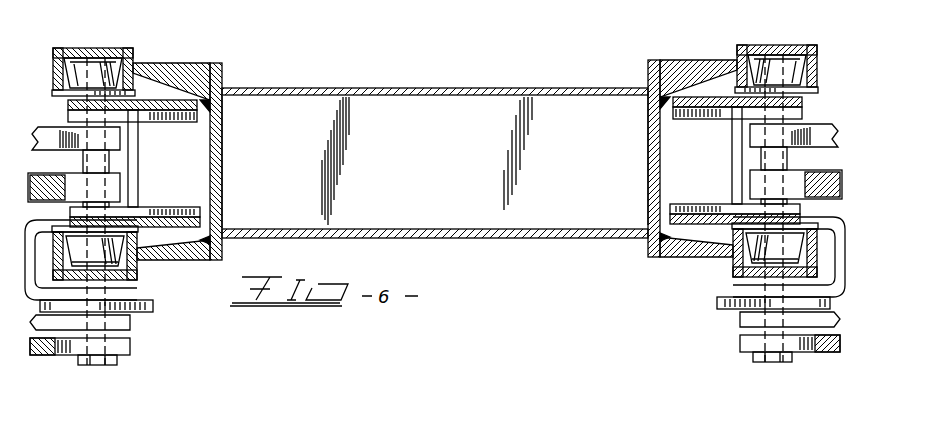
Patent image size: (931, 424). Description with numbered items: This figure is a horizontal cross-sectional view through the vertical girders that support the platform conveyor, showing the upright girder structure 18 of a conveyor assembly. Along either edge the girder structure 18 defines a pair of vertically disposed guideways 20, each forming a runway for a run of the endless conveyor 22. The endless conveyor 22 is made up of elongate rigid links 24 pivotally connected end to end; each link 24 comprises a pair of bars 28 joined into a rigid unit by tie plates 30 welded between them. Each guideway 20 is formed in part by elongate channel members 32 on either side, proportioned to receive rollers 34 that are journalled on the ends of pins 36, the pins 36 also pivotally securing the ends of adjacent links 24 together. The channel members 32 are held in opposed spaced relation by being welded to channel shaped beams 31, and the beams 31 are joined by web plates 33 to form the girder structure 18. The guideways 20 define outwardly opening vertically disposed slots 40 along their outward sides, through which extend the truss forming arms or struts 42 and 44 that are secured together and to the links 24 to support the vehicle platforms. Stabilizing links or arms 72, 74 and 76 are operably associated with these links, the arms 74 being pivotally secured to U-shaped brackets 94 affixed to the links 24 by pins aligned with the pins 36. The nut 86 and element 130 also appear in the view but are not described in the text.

The girder structure 18 is at (435, 128).
The guideways 20 is at (190, 88).
The endless conveyor 22 is at (145, 158).
The links 24 is at (168, 98).
The bars 28 is at (218, 108).
The tie plates 30 is at (132, 200).
The channel shaped beams 31 is at (213, 204).
The channel members 32 is at (70, 48).
The web plates 33 is at (418, 88).
The rollers 34 is at (107, 62).
The pins 36 is at (88, 160).
The slots 40 is at (435, 134).
The truss forming arm 42 is at (110, 135).
The truss forming arm 44 is at (105, 192).
The stabilizing link 72 is at (130, 340).
The stabilizing arm 74 is at (128, 325).
The stabilizing link 76 is at (72, 356).
The nut 86 is at (115, 365).
The U-shaped brackets 94 is at (52, 292).
The reference element 130 is at (645, 416).